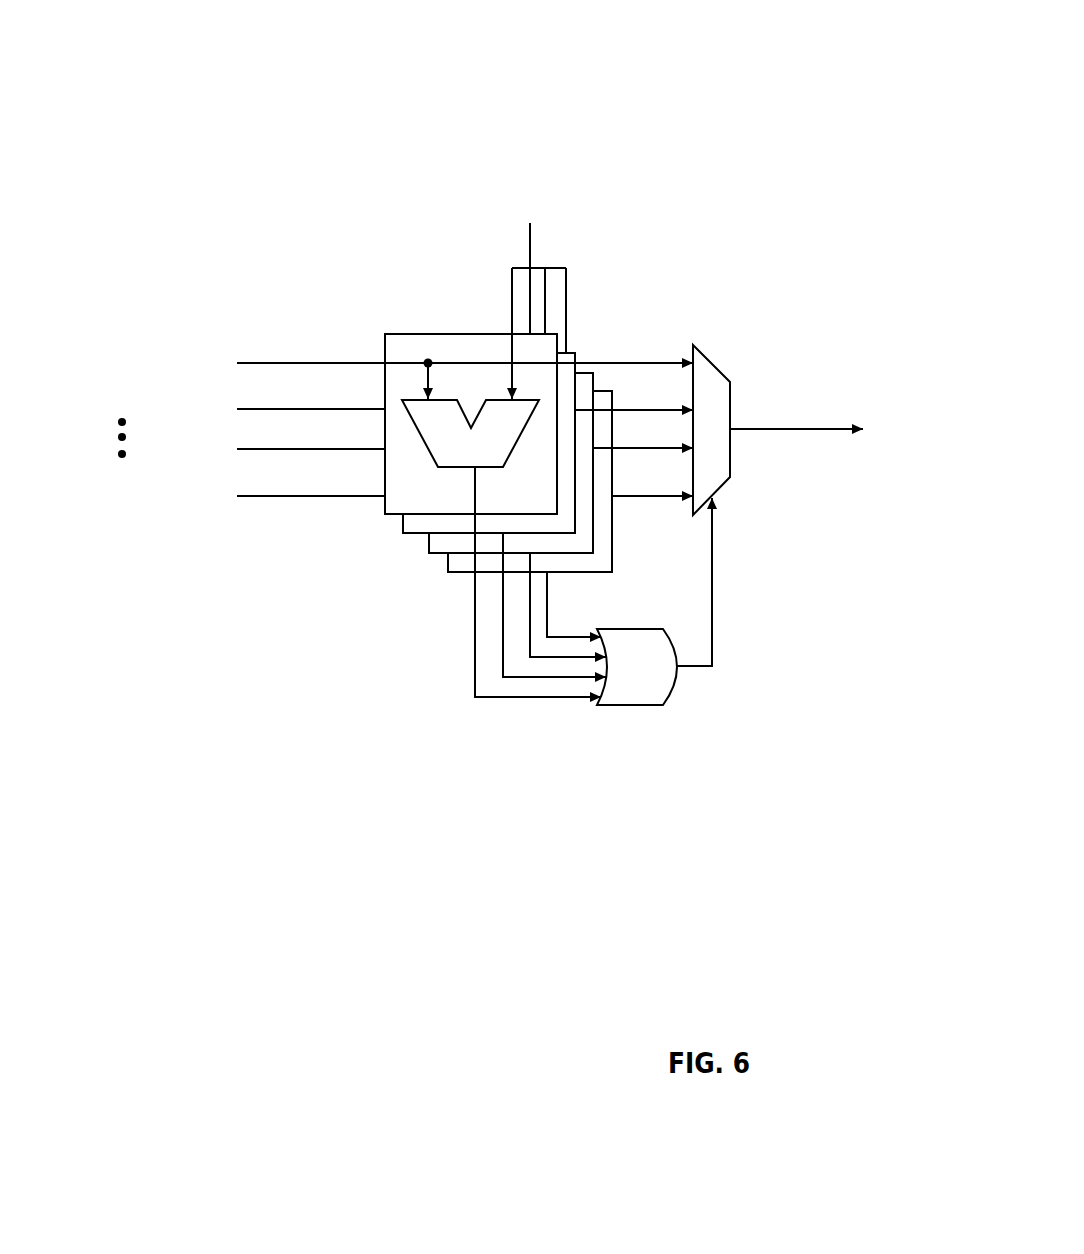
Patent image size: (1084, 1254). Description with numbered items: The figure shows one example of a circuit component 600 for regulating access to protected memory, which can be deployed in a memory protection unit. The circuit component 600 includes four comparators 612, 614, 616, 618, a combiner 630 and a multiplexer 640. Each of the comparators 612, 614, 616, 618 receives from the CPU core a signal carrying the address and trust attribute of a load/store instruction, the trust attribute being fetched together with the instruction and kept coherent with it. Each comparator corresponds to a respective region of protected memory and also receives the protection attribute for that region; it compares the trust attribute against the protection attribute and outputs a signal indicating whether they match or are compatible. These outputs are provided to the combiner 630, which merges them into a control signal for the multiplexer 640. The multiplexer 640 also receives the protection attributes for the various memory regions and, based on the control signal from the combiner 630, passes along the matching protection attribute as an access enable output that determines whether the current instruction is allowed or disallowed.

The circuit component 600 is at (710, 48).
The comparator 612 is at (383, 513).
The comparator 614 is at (417, 535).
The comparator 616 is at (445, 555).
The comparator 618 is at (472, 575).
The combiner 630 is at (646, 683).
The multiplexer 640 is at (716, 468).